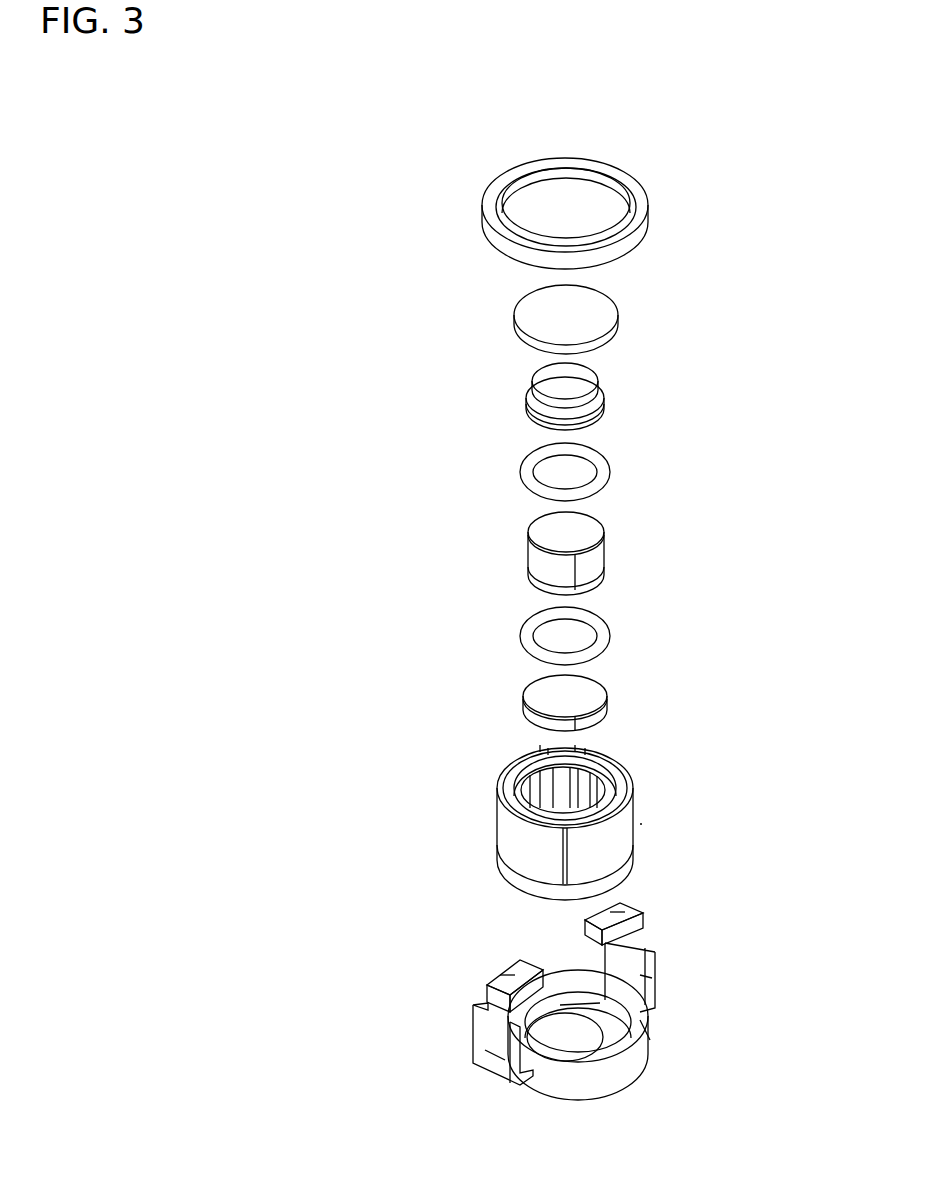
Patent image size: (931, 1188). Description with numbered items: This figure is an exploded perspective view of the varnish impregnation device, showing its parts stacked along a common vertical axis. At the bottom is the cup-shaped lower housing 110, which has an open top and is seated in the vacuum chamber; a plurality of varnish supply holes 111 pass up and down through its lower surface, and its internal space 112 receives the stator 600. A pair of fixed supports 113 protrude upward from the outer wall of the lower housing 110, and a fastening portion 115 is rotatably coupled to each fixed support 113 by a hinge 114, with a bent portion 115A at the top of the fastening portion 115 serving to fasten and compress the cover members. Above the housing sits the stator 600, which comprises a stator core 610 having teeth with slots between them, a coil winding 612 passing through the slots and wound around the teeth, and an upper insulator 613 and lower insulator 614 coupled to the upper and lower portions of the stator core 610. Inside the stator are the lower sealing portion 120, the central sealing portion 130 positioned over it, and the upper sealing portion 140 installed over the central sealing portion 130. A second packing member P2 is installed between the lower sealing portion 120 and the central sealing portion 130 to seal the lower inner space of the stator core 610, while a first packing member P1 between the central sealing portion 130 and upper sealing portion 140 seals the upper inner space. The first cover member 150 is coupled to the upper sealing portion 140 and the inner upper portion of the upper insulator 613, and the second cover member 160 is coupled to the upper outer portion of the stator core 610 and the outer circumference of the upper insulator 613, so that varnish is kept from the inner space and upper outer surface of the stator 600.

The lower housing 110 is at (615, 1075).
The varnish supply holes 111 is at (578, 1000).
The internal space 112 is at (585, 1043).
The fixed support 113 is at (498, 1062).
The hinge 114 is at (510, 1035).
The fastening portion 115 is at (490, 1000).
The bent portion 115A is at (513, 975).
The lower sealing portion 120 is at (525, 708).
The central sealing portion 130 is at (528, 565).
The upper sealing portion 140 is at (527, 403).
The first cover member 150 is at (613, 318).
The second cover member 160 is at (486, 231).
The stator 600 is at (658, 824).
The stator core 610 is at (497, 822).
The coil winding 612 is at (630, 778).
The upper insulator 613 is at (510, 768).
The lower insulator 614 is at (510, 878).
The first packing member P1 is at (606, 472).
The second packing member P2 is at (606, 637).